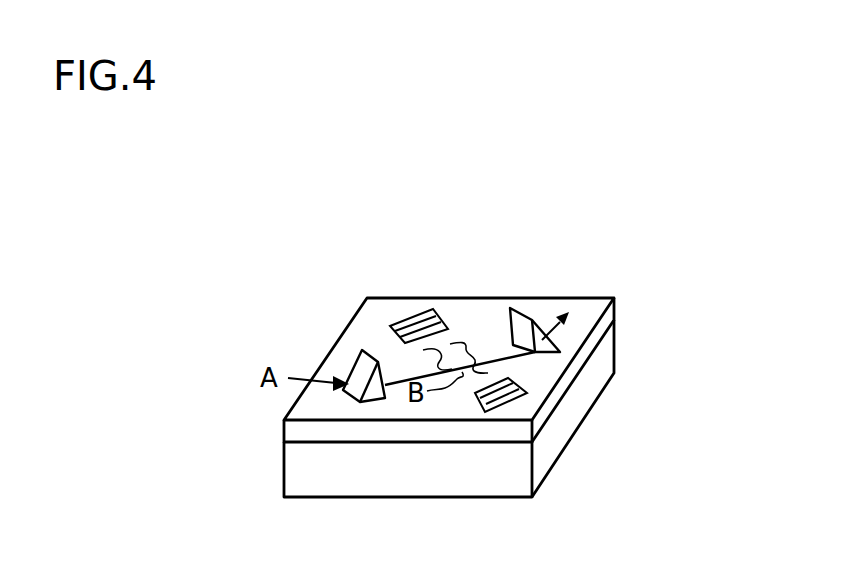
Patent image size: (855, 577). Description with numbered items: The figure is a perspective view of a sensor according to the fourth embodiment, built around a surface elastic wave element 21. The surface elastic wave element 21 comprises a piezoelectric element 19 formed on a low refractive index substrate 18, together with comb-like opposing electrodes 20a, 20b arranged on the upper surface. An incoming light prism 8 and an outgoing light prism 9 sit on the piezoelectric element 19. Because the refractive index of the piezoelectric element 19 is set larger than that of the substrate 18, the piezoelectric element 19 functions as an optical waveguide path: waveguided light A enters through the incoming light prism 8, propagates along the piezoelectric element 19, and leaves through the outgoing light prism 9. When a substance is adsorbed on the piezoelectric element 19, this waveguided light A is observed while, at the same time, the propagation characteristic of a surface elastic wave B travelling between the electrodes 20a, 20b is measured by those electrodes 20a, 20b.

The incoming light prism 8 is at (356, 372).
The outgoing light prism 9 is at (510, 312).
The low refractive index substrate 18 is at (578, 410).
The piezoelectric element 19 is at (608, 317).
The comb-like opposing electrode 20a is at (474, 401).
The comb-like opposing electrode 20b is at (447, 322).
The surface elastic wave element 21 is at (445, 363).